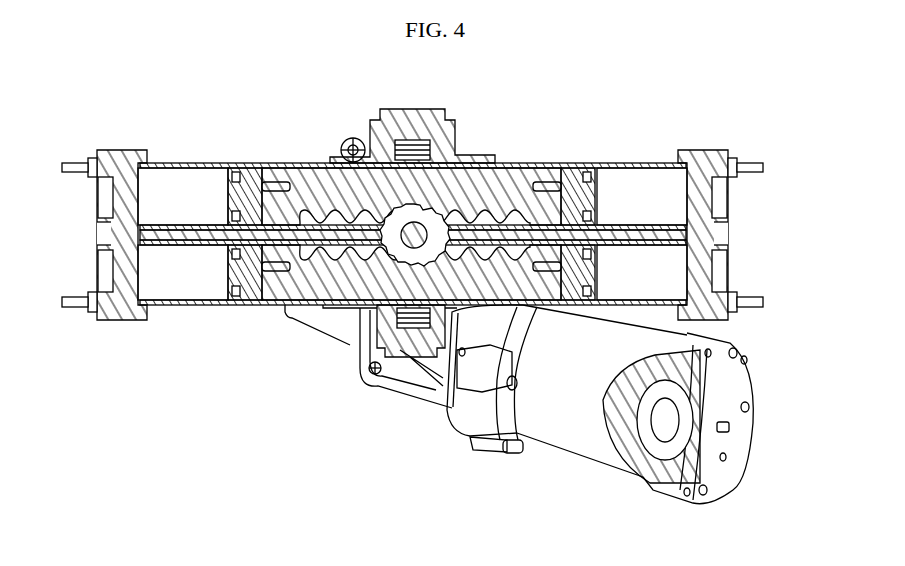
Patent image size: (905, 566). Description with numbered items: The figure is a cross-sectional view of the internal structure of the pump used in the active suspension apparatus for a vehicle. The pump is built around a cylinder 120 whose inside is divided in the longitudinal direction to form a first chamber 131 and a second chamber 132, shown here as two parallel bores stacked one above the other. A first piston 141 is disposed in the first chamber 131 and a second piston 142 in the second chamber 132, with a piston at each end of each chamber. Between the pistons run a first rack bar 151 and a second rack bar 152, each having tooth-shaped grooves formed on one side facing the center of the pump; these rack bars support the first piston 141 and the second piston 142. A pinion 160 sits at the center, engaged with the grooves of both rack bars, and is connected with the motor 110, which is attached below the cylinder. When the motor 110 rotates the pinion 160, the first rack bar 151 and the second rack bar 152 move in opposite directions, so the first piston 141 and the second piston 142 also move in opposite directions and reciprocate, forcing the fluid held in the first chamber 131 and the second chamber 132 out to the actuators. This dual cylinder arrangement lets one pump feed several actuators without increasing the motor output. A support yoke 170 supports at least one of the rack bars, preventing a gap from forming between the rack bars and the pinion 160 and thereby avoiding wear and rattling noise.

The motor 110 is at (577, 437).
The cylinder 120 is at (205, 162).
The first chamber 131 is at (183, 168).
The second chamber 132 is at (180, 287).
The first piston 141 is at (247, 180).
The second piston 142 is at (247, 275).
The first rack bar 151 is at (505, 175).
The second rack bar 152 is at (325, 290).
The pinion 160 is at (356, 138).
The support yoke 170 is at (410, 112).